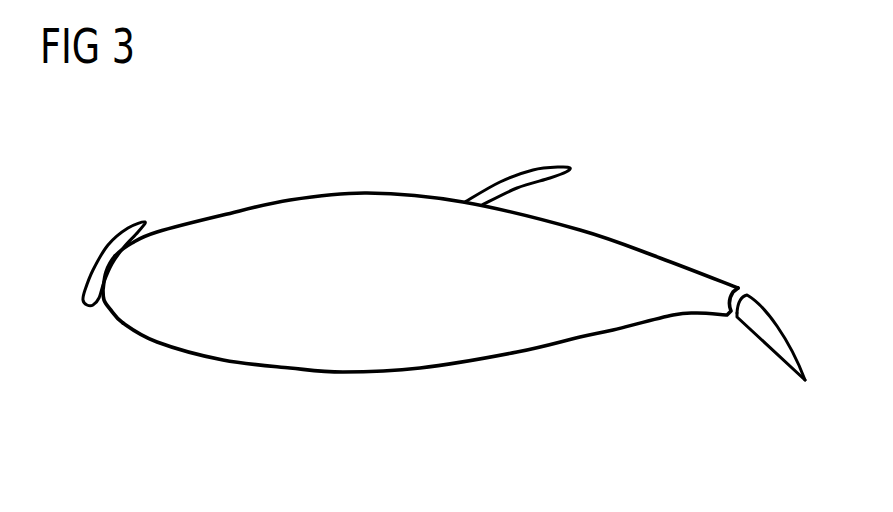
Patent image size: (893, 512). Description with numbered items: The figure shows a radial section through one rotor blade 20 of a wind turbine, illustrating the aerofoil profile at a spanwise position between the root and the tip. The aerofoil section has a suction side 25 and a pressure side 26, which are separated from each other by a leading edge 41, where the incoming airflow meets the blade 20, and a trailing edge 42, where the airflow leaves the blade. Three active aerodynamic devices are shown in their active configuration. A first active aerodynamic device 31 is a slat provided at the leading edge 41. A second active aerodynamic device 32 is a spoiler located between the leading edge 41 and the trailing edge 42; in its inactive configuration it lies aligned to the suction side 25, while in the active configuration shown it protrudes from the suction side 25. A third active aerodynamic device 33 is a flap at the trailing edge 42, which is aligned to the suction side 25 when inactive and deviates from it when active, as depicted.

The rotor blade 20 is at (395, 287).
The suction side 25 is at (298, 195).
The pressure side 26 is at (420, 370).
The first active aerodynamic device 31 is at (98, 253).
The second active aerodynamic device 32 is at (513, 178).
The third active aerodynamic device 33 is at (797, 364).
The leading edge 41 is at (117, 318).
The trailing edge 42 is at (805, 380).